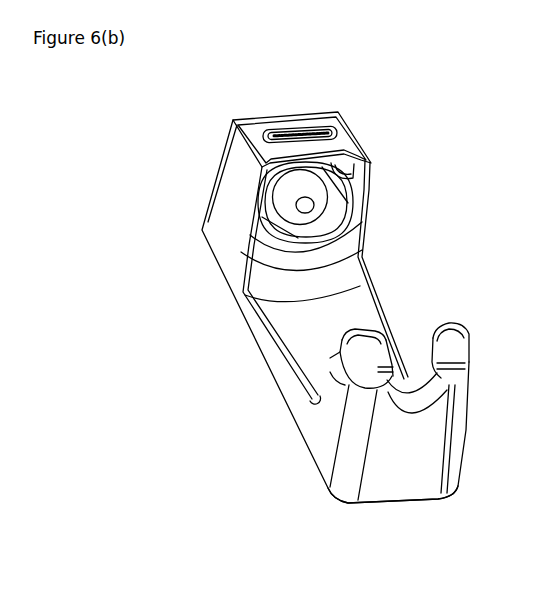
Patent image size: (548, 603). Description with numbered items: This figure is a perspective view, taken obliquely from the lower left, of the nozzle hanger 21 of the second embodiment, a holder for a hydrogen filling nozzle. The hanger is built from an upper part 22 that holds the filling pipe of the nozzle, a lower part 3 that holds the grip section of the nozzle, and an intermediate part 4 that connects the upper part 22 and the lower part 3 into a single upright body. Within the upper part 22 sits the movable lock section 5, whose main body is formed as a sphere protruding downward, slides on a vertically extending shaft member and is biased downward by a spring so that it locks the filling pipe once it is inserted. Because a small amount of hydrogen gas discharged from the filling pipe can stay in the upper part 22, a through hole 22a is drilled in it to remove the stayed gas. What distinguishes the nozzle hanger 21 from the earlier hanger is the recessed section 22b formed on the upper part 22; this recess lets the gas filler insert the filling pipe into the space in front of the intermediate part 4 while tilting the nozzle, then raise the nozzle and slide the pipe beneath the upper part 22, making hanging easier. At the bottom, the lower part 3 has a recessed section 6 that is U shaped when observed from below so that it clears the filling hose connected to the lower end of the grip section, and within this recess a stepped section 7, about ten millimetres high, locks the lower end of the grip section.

The nozzle hanger 21 is at (216, 84).
The upper part 22 is at (287, 113).
The through hole 22a is at (297, 127).
The recessed section 22b is at (352, 182).
The movable lock section 5 is at (327, 213).
The intermediate part 4 is at (246, 328).
The stepped section 7 is at (434, 324).
The recessed section 6 is at (416, 397).
The lower part 3 is at (410, 470).